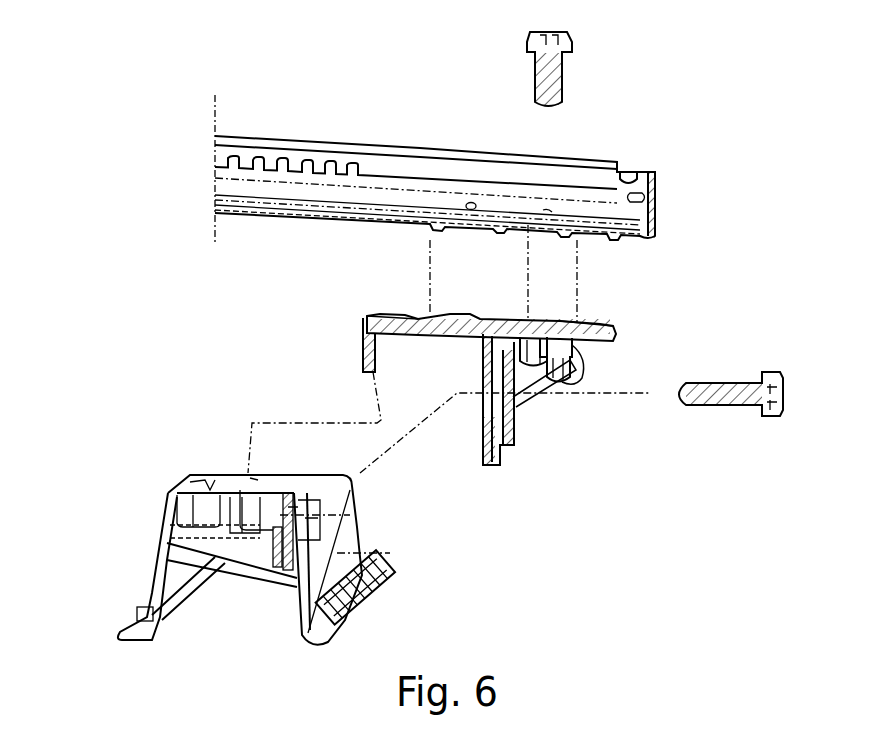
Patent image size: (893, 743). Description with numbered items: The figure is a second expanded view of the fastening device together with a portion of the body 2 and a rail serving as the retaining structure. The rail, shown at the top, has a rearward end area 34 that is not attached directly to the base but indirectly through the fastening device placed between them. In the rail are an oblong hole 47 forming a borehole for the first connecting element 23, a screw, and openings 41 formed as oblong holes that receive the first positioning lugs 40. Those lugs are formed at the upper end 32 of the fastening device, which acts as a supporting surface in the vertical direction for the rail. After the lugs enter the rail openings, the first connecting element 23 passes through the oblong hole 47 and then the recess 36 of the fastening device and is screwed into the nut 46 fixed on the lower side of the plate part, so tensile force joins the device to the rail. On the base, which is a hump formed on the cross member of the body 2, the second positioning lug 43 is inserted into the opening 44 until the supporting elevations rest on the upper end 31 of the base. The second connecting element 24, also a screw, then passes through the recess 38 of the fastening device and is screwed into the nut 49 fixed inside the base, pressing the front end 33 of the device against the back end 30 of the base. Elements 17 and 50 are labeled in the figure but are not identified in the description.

The body 2 is at (160, 530).
The rail 17 is at (268, 160).
The first connecting element 23 is at (528, 44).
The second connecting element 24 is at (728, 400).
The back end 30 is at (345, 528).
The upper end 31 is at (255, 478).
The upper end 32 is at (540, 326).
The front end 33 is at (488, 460).
The rearward end area 34 is at (625, 172).
The recess 36 is at (528, 336).
The recess 38 is at (513, 452).
The first positioning lug 40 is at (422, 320).
The opening 41 is at (425, 225).
The second positioning lug 43 is at (363, 355).
The opening 44 is at (210, 482).
The nut 46 is at (568, 352).
The oblong hole 47 is at (548, 222).
The nut 49 is at (266, 580).
The housing latch 50 is at (330, 505).